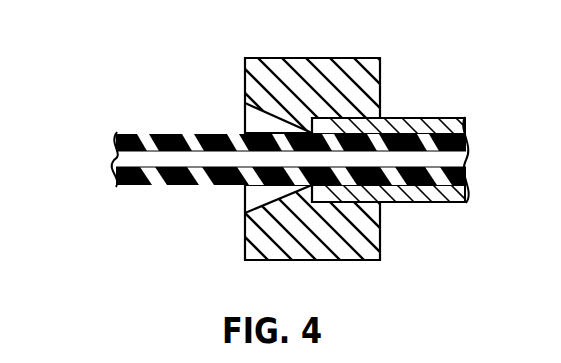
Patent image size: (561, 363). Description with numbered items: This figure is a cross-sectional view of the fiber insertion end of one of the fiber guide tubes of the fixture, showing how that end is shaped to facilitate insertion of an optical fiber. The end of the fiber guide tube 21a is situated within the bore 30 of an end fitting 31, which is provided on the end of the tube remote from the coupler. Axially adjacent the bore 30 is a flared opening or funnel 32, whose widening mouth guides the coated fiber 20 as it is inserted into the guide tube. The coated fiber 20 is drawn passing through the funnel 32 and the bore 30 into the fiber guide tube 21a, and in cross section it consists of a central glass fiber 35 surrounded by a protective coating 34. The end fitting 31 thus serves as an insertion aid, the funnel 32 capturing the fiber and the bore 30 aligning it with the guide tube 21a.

The coated fiber 20 is at (261, 157).
The fiber guide tube 21a is at (408, 117).
The bore 30 is at (375, 200).
The end fitting 31 is at (310, 57).
The funnel 32 is at (245, 106).
The protective coating 34 is at (139, 132).
The glass fiber 35 is at (112, 157).